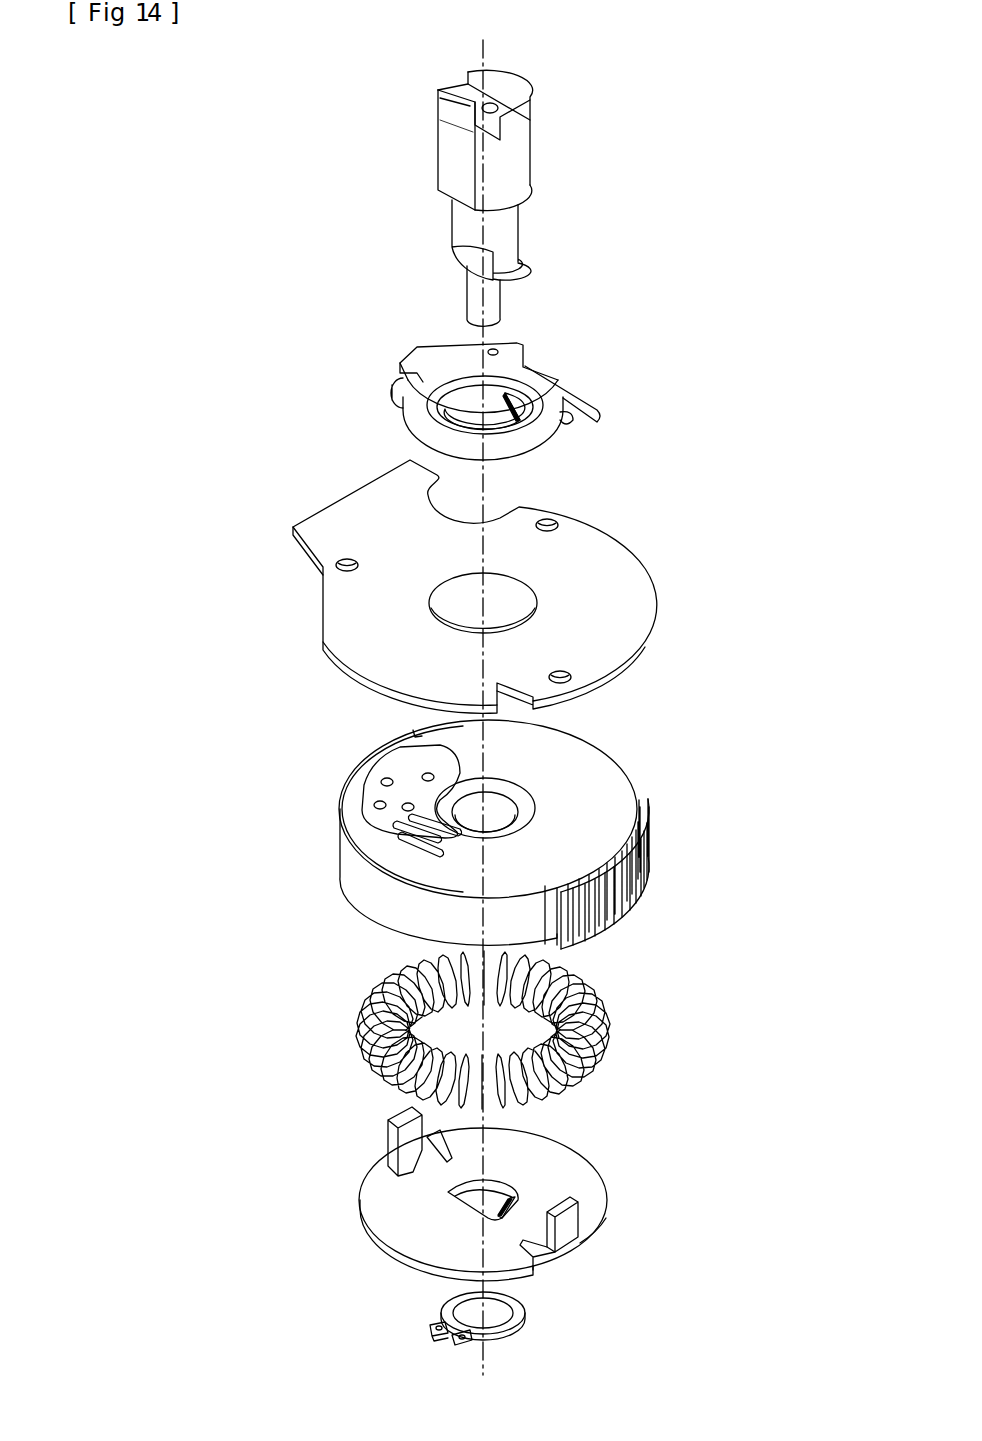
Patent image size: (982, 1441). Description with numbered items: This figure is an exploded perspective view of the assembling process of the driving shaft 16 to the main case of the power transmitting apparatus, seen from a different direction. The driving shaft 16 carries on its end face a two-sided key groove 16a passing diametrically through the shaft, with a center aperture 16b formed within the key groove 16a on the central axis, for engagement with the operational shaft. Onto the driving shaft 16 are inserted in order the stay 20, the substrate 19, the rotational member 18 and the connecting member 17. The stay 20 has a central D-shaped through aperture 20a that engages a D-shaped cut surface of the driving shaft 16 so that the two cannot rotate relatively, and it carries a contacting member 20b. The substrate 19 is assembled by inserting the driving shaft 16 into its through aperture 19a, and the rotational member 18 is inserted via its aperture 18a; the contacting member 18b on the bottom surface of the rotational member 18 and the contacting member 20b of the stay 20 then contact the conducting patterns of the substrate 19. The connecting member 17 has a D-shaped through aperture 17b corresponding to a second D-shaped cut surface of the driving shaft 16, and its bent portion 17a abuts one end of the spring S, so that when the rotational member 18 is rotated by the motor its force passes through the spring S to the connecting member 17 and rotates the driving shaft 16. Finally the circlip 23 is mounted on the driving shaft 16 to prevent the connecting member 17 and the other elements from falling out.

The driving shaft 16 is at (479, 192).
The key groove 16a is at (458, 88).
The center aperture 16b is at (486, 106).
The stay 20 is at (439, 374).
The through aperture 20a is at (497, 405).
The contacting member 20b is at (389, 392).
The substrate 19 is at (516, 586).
The through aperture 19a is at (516, 630).
The rotational member 18 is at (464, 834).
The aperture 18a is at (500, 810).
The contacting member 18b is at (405, 764).
The spring S is at (352, 1030).
The connecting member 17 is at (478, 1193).
The bent portion 17a is at (388, 1140).
The through aperture 17b is at (512, 1196).
The circlip 23 is at (526, 1318).